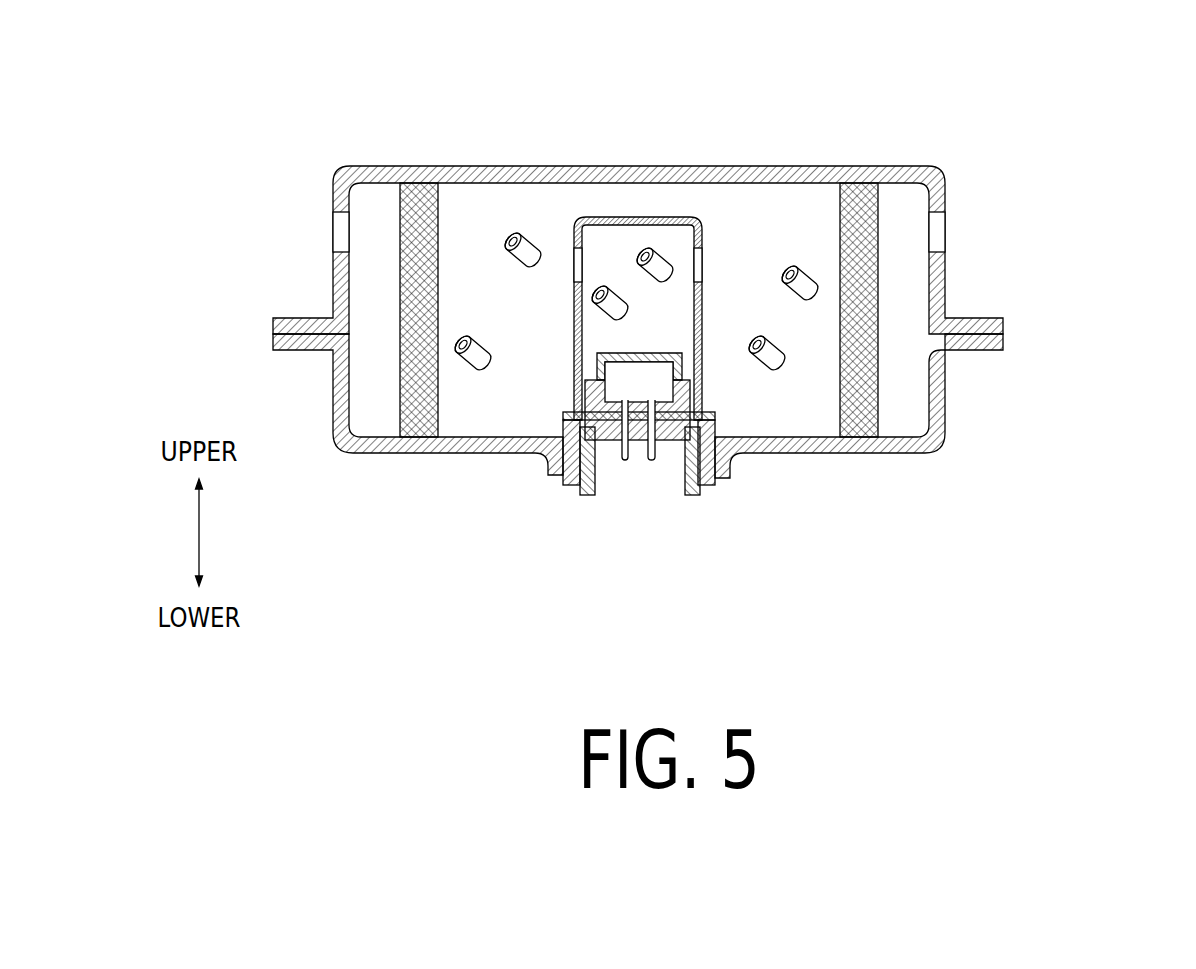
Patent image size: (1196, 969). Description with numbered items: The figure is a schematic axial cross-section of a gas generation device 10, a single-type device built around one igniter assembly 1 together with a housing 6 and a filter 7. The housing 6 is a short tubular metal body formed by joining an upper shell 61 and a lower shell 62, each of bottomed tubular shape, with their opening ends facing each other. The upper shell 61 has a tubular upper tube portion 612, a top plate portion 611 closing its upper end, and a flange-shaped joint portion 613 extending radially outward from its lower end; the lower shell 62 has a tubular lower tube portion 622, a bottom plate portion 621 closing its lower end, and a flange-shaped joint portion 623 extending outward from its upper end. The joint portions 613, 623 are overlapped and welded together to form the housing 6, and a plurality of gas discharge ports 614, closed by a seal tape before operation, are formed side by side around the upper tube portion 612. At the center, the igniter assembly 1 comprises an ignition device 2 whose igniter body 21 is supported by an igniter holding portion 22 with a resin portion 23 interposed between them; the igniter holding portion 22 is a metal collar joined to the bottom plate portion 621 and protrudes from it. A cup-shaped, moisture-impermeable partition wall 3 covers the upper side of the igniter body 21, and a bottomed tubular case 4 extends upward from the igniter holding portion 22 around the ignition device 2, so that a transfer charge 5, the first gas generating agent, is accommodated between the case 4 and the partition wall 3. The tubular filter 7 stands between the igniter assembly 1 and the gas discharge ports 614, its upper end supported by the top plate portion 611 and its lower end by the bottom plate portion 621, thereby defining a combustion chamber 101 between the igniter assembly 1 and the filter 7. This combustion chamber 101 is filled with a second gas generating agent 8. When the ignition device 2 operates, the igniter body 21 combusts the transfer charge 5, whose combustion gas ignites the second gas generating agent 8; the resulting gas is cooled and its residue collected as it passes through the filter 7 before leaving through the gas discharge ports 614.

The gas generation device 10 is at (325, 96).
The igniter assembly 1 is at (633, 217).
The combustion chamber 101 is at (742, 243).
The ignition device 2 is at (595, 585).
The igniter body 21 is at (625, 460).
The igniter holding portion 22 is at (705, 483).
The resin portion 23 is at (693, 493).
The partition wall 3 is at (700, 373).
The case 4 is at (702, 342).
The transfer charge 5 is at (610, 312).
The housing 6 is at (1128, 297).
The upper shell 61 is at (1005, 327).
The top plate portion 611 is at (563, 165).
The upper tube portion 612 is at (947, 280).
The joint portion 613 is at (975, 312).
The gas discharge port 614 is at (937, 233).
The lower shell 62 is at (1005, 342).
The bottom plate portion 621 is at (870, 455).
The lower tube portion 622 is at (945, 413).
The joint portion 623 is at (965, 353).
The filter 7 is at (862, 345).
The second gas generating agent 8 is at (487, 343).